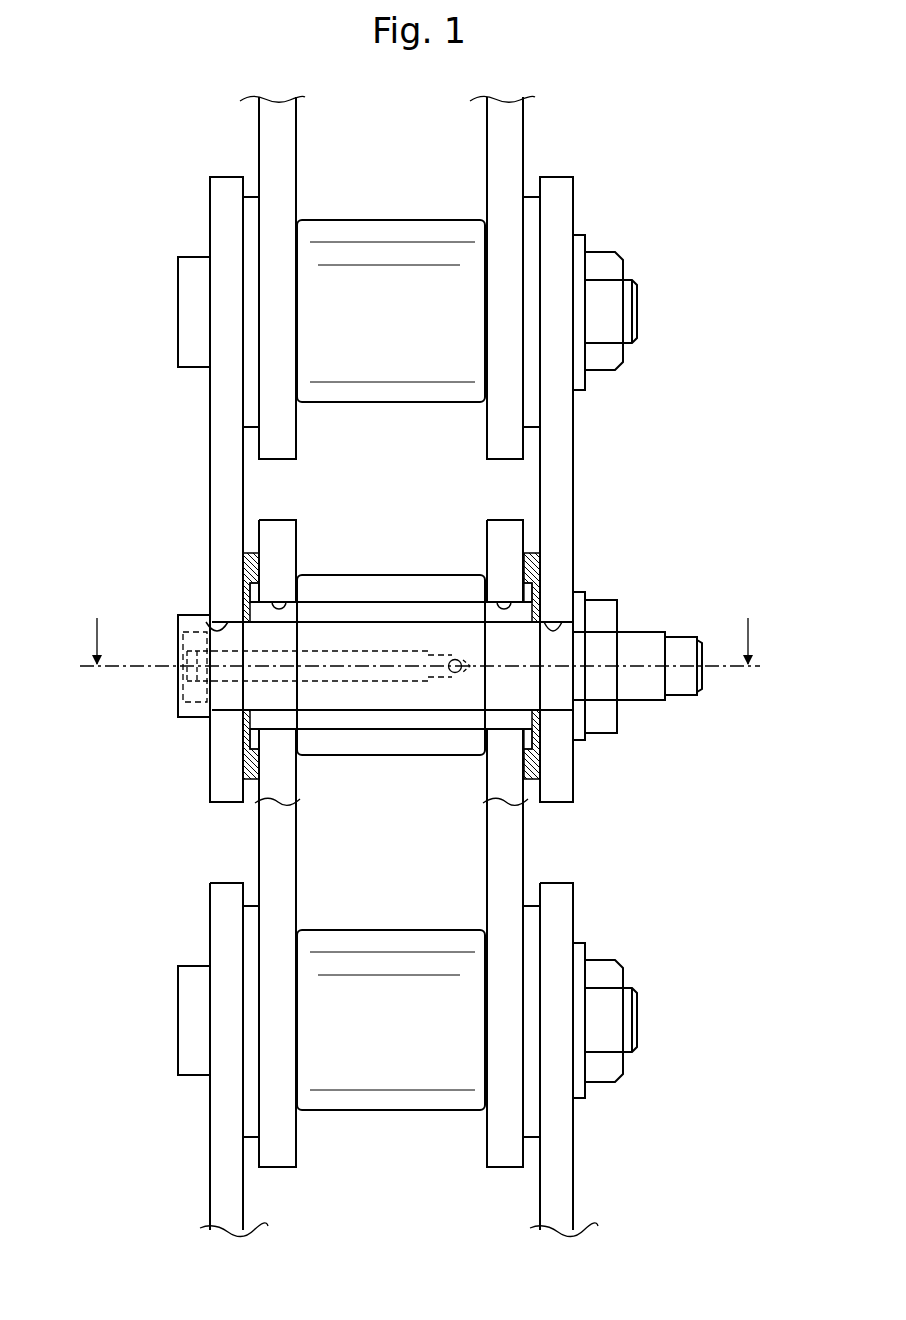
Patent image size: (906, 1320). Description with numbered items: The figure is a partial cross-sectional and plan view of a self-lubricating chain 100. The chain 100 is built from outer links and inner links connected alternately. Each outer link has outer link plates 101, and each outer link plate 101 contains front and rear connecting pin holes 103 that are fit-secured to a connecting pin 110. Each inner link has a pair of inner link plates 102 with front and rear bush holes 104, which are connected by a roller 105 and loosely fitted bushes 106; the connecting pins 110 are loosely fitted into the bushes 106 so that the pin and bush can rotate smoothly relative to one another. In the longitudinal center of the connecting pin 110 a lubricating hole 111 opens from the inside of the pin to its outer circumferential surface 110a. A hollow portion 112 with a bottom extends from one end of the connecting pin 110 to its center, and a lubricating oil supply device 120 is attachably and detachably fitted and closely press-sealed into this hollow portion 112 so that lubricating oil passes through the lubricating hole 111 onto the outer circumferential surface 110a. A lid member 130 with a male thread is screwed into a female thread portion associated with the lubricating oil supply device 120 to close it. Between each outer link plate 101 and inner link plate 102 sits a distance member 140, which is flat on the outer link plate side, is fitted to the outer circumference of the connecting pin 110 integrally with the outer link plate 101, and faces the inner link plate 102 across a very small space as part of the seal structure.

The self-lubricating chain 100 is at (133, 133).
The outer link plate 101 is at (222, 405).
The inner link plate 102 is at (275, 845).
The connecting pin hole 103 is at (222, 624).
The bush hole 104 is at (283, 604).
The roller 105 is at (386, 230).
The bush 106 is at (369, 725).
The connecting pin 110 is at (192, 270).
The outer circumferential surface 110a is at (408, 714).
The lubricating hole 111 is at (455, 674).
The hollow portion 112 is at (335, 676).
The lubricating oil supply device 120 is at (250, 676).
The lid member 130 is at (182, 695).
The distance member 140 is at (250, 556).